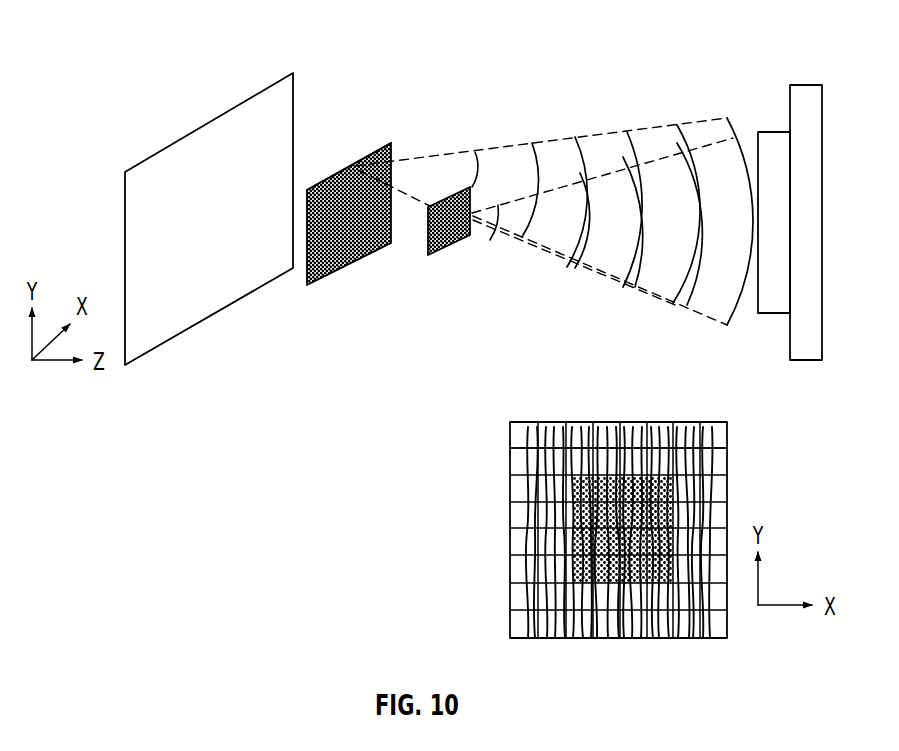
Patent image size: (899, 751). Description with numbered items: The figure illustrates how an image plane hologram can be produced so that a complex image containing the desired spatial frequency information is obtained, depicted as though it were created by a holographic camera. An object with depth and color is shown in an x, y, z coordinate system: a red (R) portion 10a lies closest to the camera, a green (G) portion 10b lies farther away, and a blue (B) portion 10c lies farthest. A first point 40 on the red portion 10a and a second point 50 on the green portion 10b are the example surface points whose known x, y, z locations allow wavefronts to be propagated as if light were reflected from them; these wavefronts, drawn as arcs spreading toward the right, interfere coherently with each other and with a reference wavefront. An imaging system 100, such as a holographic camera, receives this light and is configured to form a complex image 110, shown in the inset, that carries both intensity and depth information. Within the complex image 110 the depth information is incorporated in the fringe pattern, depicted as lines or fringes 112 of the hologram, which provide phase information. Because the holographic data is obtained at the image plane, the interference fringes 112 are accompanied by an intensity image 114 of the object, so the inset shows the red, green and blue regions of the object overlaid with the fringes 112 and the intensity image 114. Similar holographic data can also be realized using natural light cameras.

The red portion 10a is at (437, 255).
The green portion 10b is at (355, 263).
The blue portion 10c is at (211, 122).
The first point 40 is at (452, 218).
The second point 50 is at (350, 165).
The imaging system 100 is at (806, 83).
The complex image 110 is at (572, 557).
The fringes 112 is at (533, 592).
The intensity image 114 is at (617, 583).